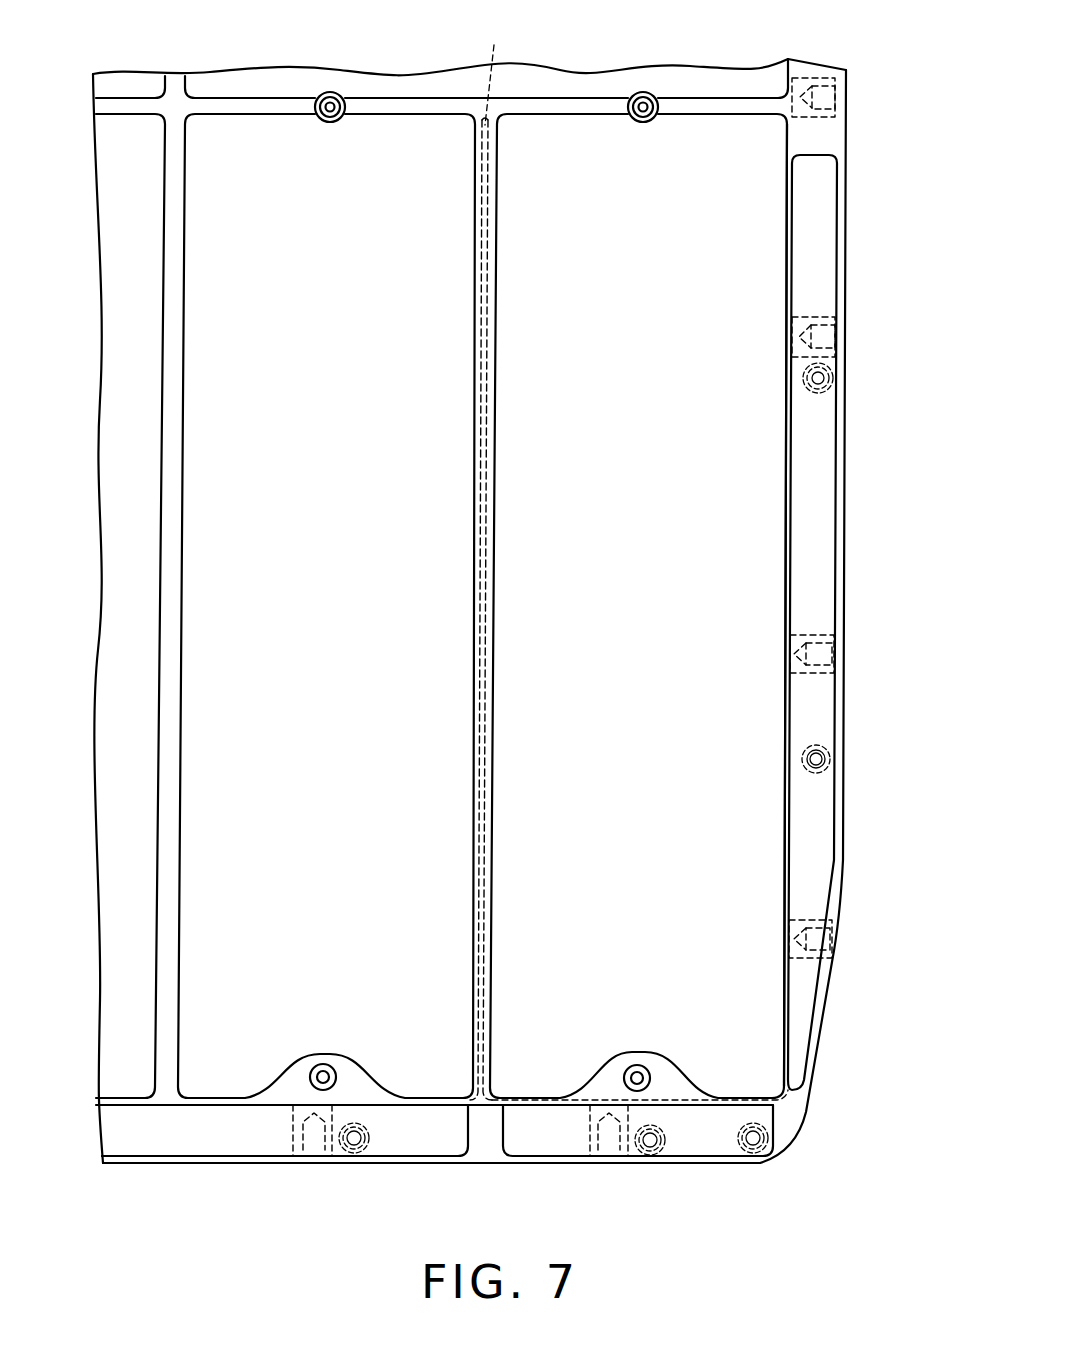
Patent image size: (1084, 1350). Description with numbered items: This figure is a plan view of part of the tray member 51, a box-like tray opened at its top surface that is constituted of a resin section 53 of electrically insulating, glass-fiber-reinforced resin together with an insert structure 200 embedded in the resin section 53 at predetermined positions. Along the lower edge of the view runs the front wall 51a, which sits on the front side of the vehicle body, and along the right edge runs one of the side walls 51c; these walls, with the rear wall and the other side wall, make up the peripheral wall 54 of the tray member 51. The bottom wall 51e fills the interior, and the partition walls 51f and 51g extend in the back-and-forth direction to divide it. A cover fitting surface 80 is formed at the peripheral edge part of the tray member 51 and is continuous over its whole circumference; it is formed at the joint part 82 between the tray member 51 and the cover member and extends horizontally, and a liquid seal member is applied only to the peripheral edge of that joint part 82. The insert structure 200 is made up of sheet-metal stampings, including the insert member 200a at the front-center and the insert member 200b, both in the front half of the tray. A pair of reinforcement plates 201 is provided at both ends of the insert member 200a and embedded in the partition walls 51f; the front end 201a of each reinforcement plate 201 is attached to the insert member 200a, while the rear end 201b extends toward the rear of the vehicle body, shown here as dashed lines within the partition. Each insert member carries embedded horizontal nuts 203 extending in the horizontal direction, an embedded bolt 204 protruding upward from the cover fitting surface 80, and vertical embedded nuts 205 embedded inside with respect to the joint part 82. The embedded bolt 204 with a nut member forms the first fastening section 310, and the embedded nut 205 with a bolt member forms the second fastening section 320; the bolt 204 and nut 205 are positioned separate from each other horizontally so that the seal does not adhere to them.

The tray member 51 is at (601, 60).
The front wall 51a is at (237, 1143).
The side wall 51c is at (818, 565).
The bottom wall 51e is at (284, 802).
The partition wall 51f is at (493, 672).
The partition wall 51g is at (170, 692).
The resin section 53 is at (487, 805).
The peripheral wall 54 is at (826, 1066).
The cover fitting surface 80 is at (818, 508).
The joint part 82 is at (821, 453).
The insert structure 200 is at (473, 1165).
The insert member 200a is at (162, 1145).
The insert member 200b is at (823, 866).
The reinforcement plate 201 is at (492, 580).
The front end of reinforcement plate 201a is at (500, 1098).
The rear end of reinforcement plate 201b is at (494, 71).
The embedded horizontal nut 203 is at (832, 100).
The embedded bolt 204 is at (832, 759).
The embedded nut 205 is at (830, 378).
The first fastening section 310 is at (803, 776).
The second fastening section 320 is at (808, 396).